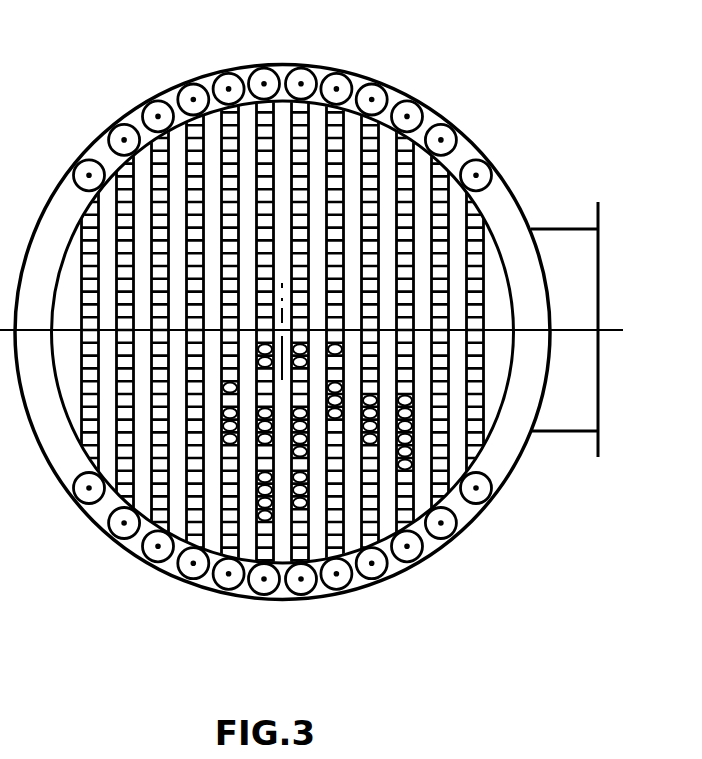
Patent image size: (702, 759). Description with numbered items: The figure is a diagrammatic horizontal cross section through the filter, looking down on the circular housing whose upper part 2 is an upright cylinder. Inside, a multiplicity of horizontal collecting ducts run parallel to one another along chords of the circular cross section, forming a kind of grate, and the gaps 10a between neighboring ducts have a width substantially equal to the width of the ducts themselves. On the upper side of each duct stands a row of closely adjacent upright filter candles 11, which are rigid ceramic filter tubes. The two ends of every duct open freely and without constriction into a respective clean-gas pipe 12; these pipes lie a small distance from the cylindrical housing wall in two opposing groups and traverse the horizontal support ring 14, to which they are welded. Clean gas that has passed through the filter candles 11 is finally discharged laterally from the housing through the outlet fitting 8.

The upper part 2 is at (522, 203).
The outlet fitting 8 is at (598, 277).
The gaps 10a is at (427, 150).
The filter candles 11 is at (400, 470).
The clean-gas pipes 12 is at (193, 99).
The support ring 14 is at (513, 457).